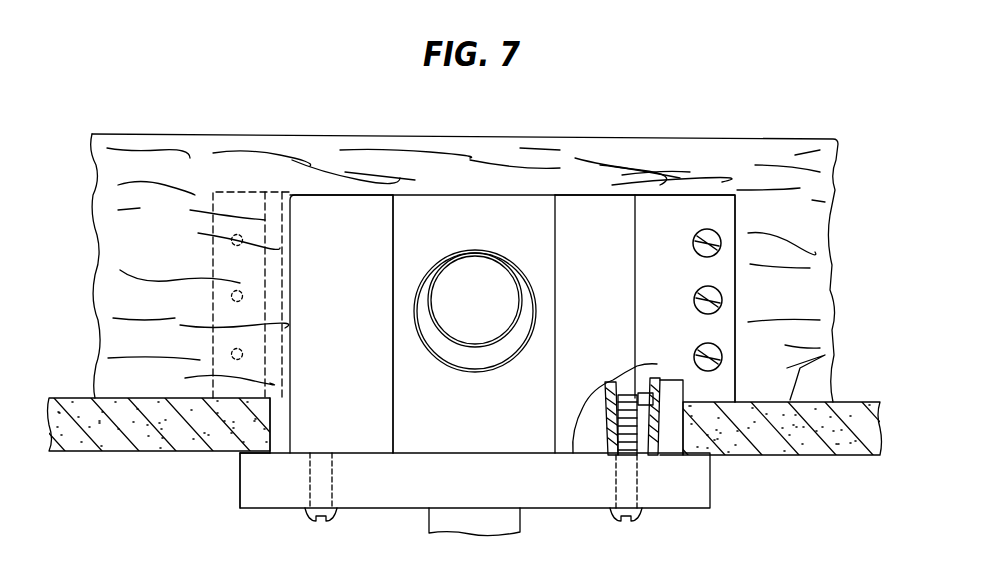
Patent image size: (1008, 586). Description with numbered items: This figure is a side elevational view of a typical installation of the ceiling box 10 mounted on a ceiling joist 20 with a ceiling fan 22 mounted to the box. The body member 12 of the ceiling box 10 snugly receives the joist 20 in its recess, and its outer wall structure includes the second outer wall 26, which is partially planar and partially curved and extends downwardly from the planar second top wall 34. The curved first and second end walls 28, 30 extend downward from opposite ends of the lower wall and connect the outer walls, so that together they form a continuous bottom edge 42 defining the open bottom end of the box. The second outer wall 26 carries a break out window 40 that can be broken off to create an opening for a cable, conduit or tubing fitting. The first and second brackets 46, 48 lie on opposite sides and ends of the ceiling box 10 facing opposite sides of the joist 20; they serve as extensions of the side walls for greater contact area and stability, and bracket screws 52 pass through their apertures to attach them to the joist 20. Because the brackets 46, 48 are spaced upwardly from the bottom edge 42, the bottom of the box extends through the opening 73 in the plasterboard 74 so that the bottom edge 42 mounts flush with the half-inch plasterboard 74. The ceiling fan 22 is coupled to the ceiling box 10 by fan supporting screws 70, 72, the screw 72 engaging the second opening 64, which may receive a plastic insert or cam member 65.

The ceiling box 10 is at (206, 521).
The body member 12 is at (606, 192).
The ceiling joist 20 is at (168, 132).
The ceiling fan 22 is at (712, 492).
The second outer wall 26 is at (572, 195).
The first end wall 28 is at (238, 453).
The second end wall 30 is at (628, 403).
The second top wall 34 is at (471, 195).
The break out window 40 is at (477, 250).
The bottom edge 42 is at (358, 455).
The first bracket 46 is at (248, 192).
The second bracket 48 is at (715, 192).
The bracket screws 52 is at (696, 350).
The second opening 64 is at (640, 455).
The cam member 65 is at (648, 390).
The fan supporting screw 70 is at (312, 521).
The fan supporting screw 72 is at (635, 522).
The opening in plasterboard 73 is at (680, 438).
The plasterboard 74 is at (100, 455).